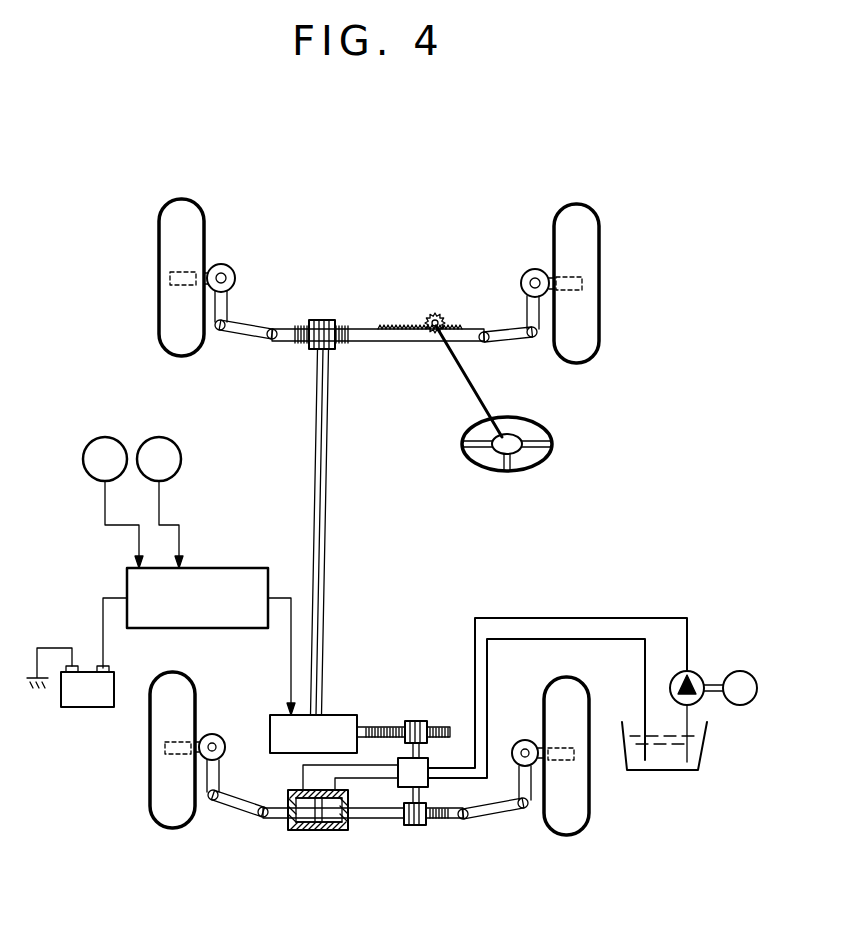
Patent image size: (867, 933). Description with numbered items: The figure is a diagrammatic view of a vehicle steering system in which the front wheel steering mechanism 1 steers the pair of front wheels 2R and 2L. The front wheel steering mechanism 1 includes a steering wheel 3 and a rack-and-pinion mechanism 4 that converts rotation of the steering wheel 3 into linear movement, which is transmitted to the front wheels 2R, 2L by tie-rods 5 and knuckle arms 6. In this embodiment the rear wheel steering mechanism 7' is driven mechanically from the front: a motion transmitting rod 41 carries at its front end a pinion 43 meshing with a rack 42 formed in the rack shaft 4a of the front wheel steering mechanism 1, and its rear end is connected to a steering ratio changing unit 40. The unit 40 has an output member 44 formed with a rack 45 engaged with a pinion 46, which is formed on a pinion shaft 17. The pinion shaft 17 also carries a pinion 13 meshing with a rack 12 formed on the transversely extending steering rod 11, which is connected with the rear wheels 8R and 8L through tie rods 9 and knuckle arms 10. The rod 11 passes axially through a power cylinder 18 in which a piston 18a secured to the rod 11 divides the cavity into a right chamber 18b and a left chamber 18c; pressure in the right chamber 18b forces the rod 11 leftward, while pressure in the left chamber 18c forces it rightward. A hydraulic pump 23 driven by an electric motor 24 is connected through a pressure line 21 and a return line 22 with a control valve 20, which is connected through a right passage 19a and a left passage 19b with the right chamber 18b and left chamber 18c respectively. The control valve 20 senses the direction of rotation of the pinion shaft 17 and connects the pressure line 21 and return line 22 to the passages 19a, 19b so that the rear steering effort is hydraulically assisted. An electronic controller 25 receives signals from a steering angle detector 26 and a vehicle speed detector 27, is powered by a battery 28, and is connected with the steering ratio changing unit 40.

The front wheel steering mechanism 1 is at (346, 290).
The left front wheel 2L is at (160, 243).
The right front wheel 2R is at (600, 242).
The steering wheel 3 is at (540, 422).
The rack-and-pinion mechanism 4 is at (441, 316).
The rack shaft 4a is at (368, 344).
The tie-rods 5 is at (244, 340).
The knuckle arms 6 is at (230, 296).
The rear wheel steering mechanism 7' is at (440, 585).
The left rear wheel 8L is at (150, 802).
The right rear wheel 8R is at (590, 805).
The tie rods 9 is at (232, 814).
The knuckle arms 10 is at (219, 774).
The steering rod 11 is at (362, 822).
The rack 12 is at (438, 822).
The pinion 13 is at (412, 826).
The pinion shaft 17 is at (420, 804).
The power cylinder 18 is at (311, 845).
The piston 18a is at (324, 833).
The right chamber 18b is at (290, 830).
The left chamber 18c is at (340, 832).
The right passage 19a is at (348, 768).
The left passage 19b is at (346, 782).
The control valve 20 is at (428, 762).
The pressure line 21 is at (567, 617).
The return line 22 is at (610, 640).
The hydraulic pump 23 is at (706, 702).
The electric motor 24 is at (736, 671).
The electronic controller 25 is at (127, 578).
The steering angle detector 26 is at (100, 437).
The vehicle speed detector 27 is at (160, 437).
The battery 28 is at (90, 708).
The steering ratio changing unit 40 is at (270, 720).
The motion transmitting rod 41 is at (326, 516).
The rack 42 is at (342, 326).
The pinion 43 is at (308, 346).
The output member 44 is at (372, 726).
The rack 45 is at (432, 724).
The pinion 46 is at (416, 720).